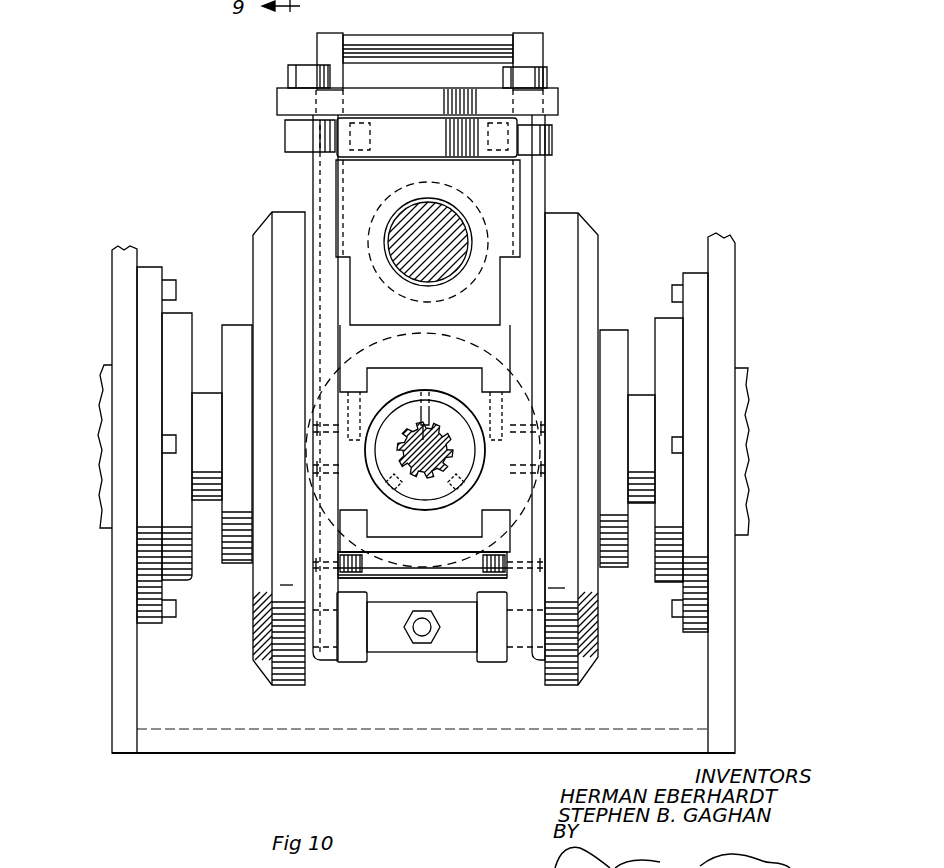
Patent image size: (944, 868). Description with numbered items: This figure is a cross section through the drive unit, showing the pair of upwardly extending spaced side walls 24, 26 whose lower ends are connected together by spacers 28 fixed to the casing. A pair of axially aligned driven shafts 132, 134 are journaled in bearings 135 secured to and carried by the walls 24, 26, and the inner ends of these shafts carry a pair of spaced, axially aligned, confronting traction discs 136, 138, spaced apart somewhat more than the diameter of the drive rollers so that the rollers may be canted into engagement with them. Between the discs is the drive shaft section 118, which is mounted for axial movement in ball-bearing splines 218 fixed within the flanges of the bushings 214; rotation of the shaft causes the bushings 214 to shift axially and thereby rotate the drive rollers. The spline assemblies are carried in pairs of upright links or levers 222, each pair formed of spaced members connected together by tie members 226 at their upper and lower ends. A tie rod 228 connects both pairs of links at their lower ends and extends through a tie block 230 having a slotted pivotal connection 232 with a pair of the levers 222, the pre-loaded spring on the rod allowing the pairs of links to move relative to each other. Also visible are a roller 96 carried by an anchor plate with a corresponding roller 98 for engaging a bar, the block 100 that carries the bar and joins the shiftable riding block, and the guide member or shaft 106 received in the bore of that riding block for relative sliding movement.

The side wall 24 is at (120, 623).
The side wall 26 is at (733, 598).
The spacer 28 is at (208, 748).
The roller 96 is at (548, 145).
The roller 98 is at (285, 134).
The block 100 is at (350, 200).
The guide member or shaft 106 is at (446, 232).
The drive shaft section 118 is at (426, 392).
The driven shaft 132 is at (192, 410).
The driven shaft 134 is at (638, 415).
The bearing 135 is at (172, 476).
The traction disc 136 is at (280, 235).
The traction disc 138 is at (580, 235).
The bushing 214 is at (384, 504).
The ball-bearing spline 218 is at (456, 472).
The link or lever 222 is at (318, 162).
The tie member 226 is at (456, 35).
The tie rod 228 is at (421, 612).
The tie block 230 is at (458, 632).
The slotted pivotal connection 232 is at (320, 666).